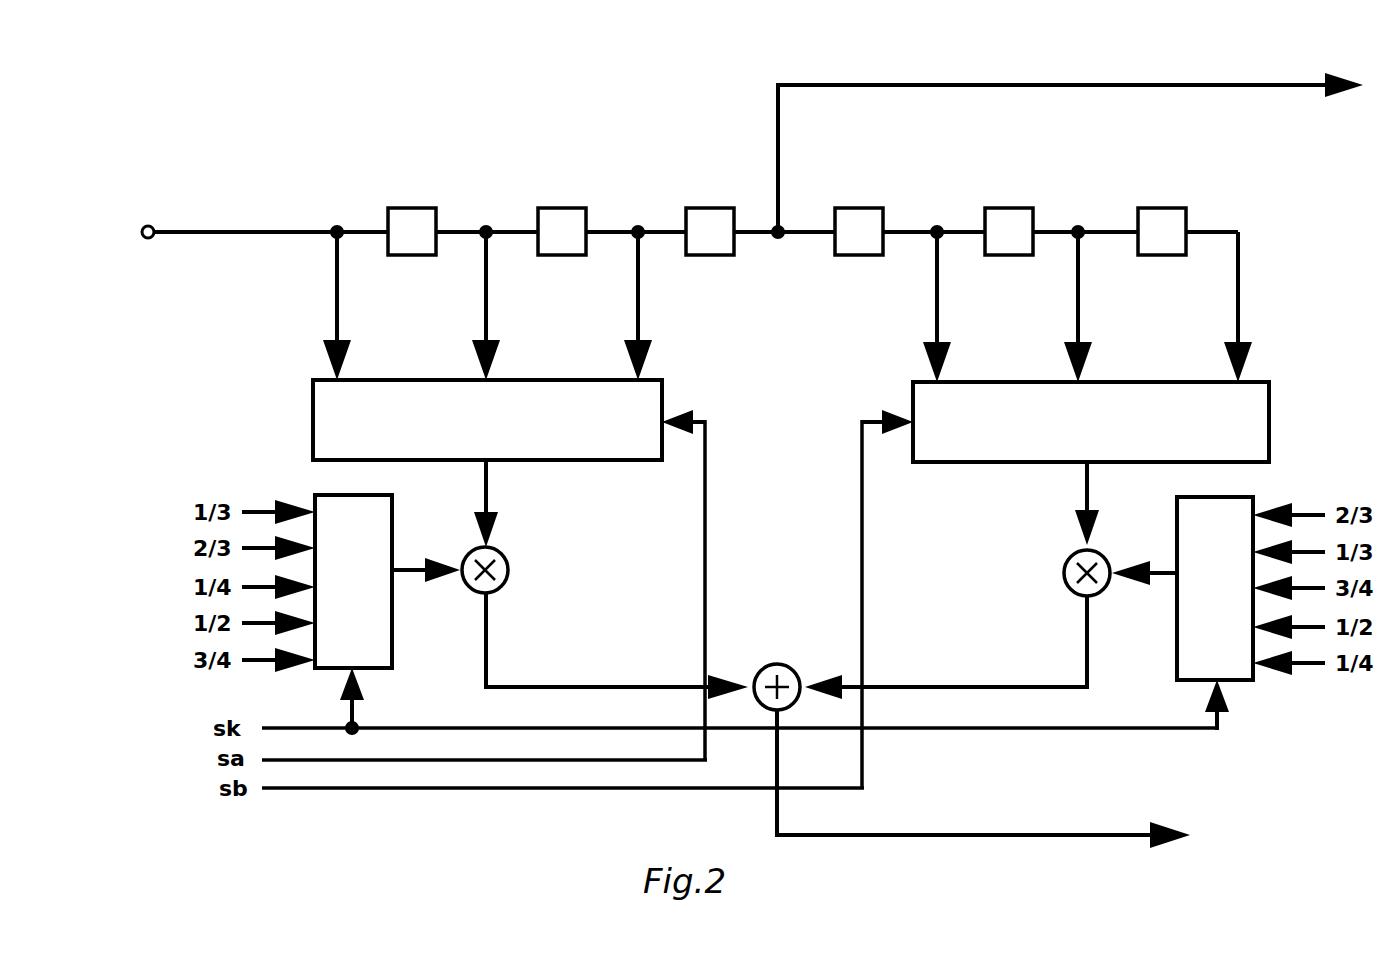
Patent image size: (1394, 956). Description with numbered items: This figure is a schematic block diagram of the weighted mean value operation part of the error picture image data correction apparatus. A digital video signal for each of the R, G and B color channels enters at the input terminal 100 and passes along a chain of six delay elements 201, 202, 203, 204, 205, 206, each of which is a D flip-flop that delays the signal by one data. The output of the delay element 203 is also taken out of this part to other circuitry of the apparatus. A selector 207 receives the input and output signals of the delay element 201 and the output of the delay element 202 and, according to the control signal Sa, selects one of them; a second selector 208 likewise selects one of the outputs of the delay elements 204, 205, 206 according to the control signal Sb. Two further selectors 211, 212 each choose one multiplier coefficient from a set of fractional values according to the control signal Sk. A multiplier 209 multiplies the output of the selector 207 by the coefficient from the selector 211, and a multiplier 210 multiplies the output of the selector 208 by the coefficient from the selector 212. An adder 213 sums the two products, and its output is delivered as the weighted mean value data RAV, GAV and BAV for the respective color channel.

The input terminal 100 is at (237, 221).
The delay element 201 is at (395, 207).
The delay element 202 is at (542, 207).
The delay element 203 is at (690, 207).
The delay element 204 is at (884, 211).
The delay element 205 is at (1034, 211).
The delay element 206 is at (1187, 211).
The selector 207 is at (663, 379).
The selector 208 is at (1270, 381).
The multiplier 209 is at (506, 556).
The multiplier 210 is at (1068, 558).
The selector 211 is at (314, 496).
The selector 212 is at (1254, 498).
The adder 213 is at (768, 663).